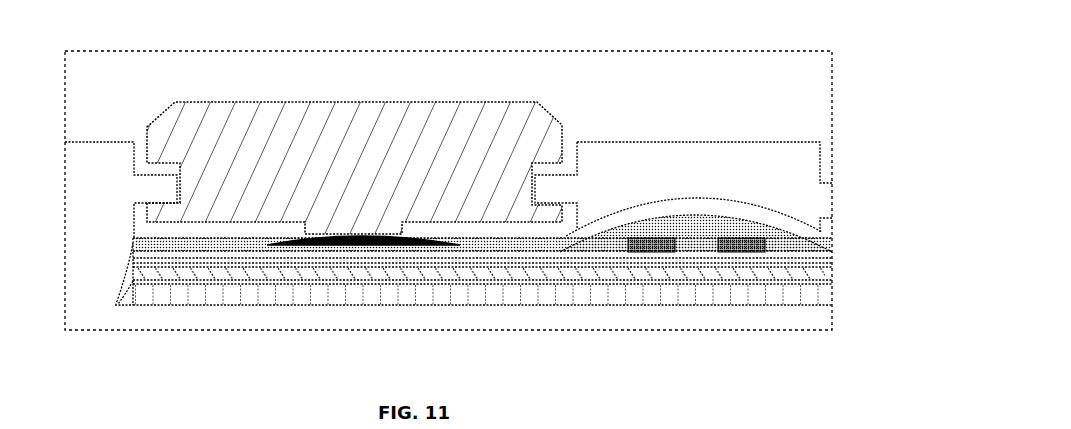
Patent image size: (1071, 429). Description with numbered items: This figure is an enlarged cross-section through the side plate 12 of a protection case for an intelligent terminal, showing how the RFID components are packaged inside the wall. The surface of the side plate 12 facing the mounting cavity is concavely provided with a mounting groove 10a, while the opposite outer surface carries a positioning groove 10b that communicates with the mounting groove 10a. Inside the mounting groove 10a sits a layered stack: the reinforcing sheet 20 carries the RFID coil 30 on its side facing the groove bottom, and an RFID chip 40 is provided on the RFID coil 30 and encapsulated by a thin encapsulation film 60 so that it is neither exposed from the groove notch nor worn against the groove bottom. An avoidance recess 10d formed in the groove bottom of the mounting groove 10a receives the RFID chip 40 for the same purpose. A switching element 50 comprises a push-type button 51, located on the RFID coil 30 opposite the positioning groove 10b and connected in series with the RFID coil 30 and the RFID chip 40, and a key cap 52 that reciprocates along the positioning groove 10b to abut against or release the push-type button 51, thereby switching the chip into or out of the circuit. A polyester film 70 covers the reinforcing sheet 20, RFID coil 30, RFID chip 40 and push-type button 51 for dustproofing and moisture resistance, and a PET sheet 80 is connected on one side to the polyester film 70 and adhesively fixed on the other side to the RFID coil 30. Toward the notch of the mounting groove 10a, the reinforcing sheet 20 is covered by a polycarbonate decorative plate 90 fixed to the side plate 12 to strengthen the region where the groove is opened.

The mounting groove 10a is at (130, 255).
The positioning groove 10b is at (133, 158).
The avoidance recess 10d is at (741, 202).
The side plate 12 is at (82, 212).
The reinforcing sheet 20 is at (447, 266).
The RFID coil 30 is at (518, 258).
The RFID chip 40 is at (650, 253).
The switching element 50 is at (910, 172).
The push-type button 51 is at (360, 240).
The key cap 52 is at (353, 135).
The encapsulation film 60 is at (783, 253).
The polyester film 70 is at (663, 209).
The PET sheet 80 is at (184, 262).
The decorative plate 90 is at (266, 292).